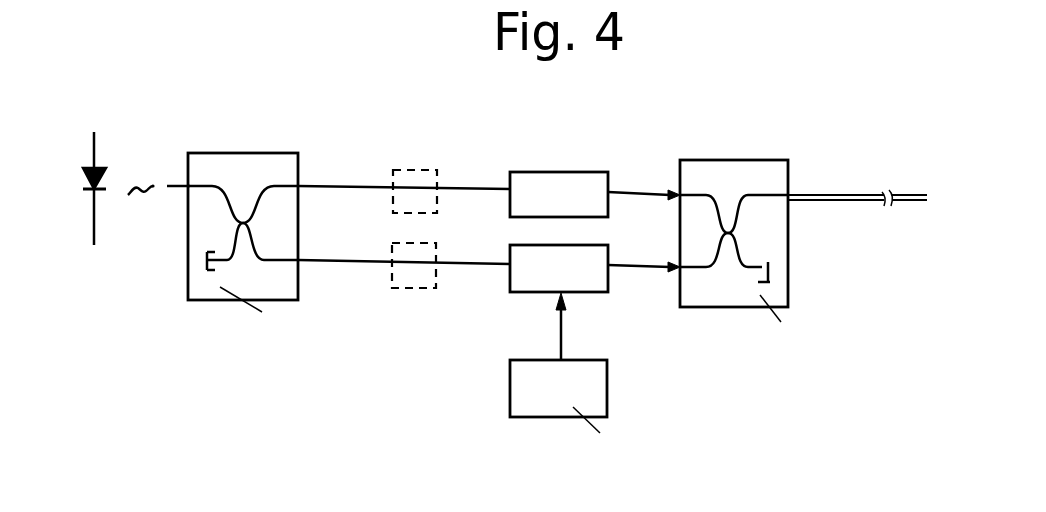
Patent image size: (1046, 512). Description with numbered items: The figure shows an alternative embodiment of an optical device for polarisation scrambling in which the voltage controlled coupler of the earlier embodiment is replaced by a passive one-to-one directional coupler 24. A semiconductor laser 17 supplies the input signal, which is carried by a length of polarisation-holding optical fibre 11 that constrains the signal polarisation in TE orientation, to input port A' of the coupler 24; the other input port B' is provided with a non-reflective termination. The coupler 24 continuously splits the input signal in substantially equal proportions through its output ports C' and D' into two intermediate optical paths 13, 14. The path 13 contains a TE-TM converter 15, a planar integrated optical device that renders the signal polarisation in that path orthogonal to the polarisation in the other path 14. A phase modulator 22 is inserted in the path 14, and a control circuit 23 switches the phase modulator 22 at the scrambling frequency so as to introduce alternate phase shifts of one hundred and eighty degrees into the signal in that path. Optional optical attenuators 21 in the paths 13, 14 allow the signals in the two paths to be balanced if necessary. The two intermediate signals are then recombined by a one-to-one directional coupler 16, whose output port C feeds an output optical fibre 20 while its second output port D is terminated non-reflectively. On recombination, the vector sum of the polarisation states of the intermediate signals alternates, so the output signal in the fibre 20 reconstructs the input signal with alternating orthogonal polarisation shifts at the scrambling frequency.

The polarisation-holding optical fibre 11 is at (177, 184).
The intermediate optical path 13 is at (316, 185).
The intermediate optical path 14 is at (316, 262).
The TE-TM converter 15 is at (568, 172).
The 1:1 directional coupler 16 is at (748, 160).
The semiconductor laser 17 is at (103, 164).
The output optical fibre 20 is at (812, 196).
The optical attenuator 21 is at (430, 204).
The phase modulator 22 is at (603, 281).
The control circuit 23 is at (601, 366).
The passive 1:1 directional coupler 24 is at (235, 154).